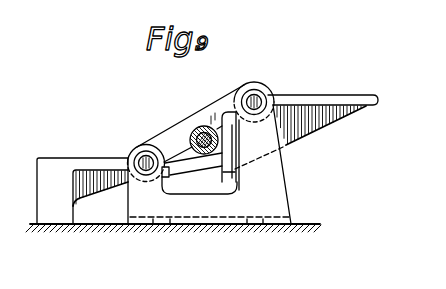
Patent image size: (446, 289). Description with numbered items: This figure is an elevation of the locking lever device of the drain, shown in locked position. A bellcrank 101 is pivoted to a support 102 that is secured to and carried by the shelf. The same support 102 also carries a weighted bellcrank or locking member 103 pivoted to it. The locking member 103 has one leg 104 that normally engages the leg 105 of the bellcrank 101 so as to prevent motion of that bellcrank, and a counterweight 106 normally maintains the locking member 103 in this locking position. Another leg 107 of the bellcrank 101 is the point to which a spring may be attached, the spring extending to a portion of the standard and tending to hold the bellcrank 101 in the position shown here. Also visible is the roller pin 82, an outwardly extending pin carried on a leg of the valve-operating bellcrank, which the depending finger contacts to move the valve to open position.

The roller pin 82 is at (199, 124).
The bellcrank 101 is at (308, 95).
The support 102 is at (283, 183).
The weighted bellcrank or locking member 103 is at (67, 157).
The leg 104 is at (203, 172).
The leg 105 is at (235, 172).
The counterweight 106 is at (56, 217).
The leg 107 is at (368, 106).